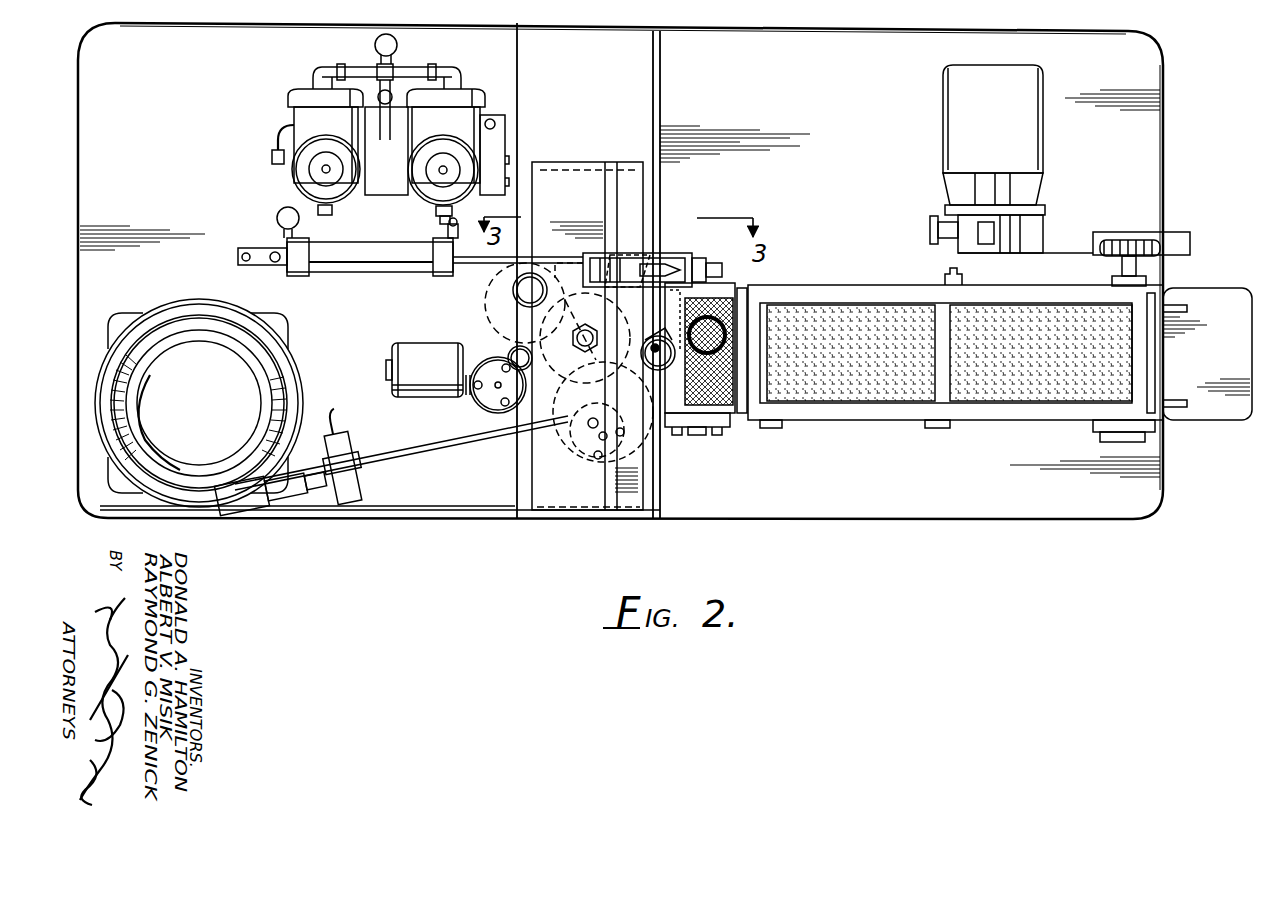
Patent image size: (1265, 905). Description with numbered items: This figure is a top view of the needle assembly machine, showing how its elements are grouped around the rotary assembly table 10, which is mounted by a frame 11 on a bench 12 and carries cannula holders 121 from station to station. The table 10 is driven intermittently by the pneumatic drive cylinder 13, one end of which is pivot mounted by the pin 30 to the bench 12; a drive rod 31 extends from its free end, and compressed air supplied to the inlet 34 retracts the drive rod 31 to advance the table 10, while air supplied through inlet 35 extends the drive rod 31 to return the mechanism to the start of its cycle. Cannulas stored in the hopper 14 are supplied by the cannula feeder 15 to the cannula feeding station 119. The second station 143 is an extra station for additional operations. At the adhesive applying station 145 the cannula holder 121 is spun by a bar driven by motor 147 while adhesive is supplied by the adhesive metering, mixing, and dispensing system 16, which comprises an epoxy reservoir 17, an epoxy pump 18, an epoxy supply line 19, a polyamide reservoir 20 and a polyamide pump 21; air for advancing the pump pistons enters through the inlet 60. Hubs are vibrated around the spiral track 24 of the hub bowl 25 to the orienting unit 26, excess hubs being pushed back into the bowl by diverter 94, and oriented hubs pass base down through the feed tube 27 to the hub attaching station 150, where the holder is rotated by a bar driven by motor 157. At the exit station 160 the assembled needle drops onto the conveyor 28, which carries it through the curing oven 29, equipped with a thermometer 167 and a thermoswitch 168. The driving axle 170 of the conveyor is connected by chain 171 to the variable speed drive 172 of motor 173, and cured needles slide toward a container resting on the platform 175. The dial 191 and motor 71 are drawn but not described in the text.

The rotary assembly table 10 is at (662, 392).
The frame 11 is at (568, 172).
The bench 12 is at (620, 271).
The pneumatic drive cylinder 13 is at (339, 252).
The hopper 14 is at (684, 257).
The cannula feeder 15 is at (706, 264).
The adhesive metering, mixing, and dispensing system 16 is at (386, 300).
The epoxy reservoir 17 is at (463, 190).
The epoxy pump 18 is at (488, 99).
The epoxy supply line 19 is at (432, 211).
The polyamide reservoir 20 is at (303, 174).
The polyamide pump 21 is at (302, 101).
The spiral track 24 is at (182, 505).
The hub bowl 25 is at (266, 368).
The orienting unit 26 is at (305, 458).
The feed tube 27 is at (424, 446).
The conveyor 28 is at (740, 306).
The curing oven 29 is at (836, 392).
The pin 30 is at (275, 264).
The drive rod 31 is at (462, 278).
The inlet 34 is at (445, 232).
The inlet 35 is at (279, 216).
The inlet 60 is at (397, 48).
The drive motor 71 is at (413, 350).
The diverter 94 is at (132, 478).
The cannula feeding station 119 is at (652, 250).
The cannula holder 121 is at (514, 290).
The second station 143 is at (510, 305).
The adhesive applying station 145 is at (510, 352).
The motor 147 is at (497, 413).
The hub attaching station 150 is at (572, 427).
The motor 157 is at (585, 462).
The exit station 160 is at (695, 372).
The thermometer 167 is at (955, 382).
The thermoswitch 168 is at (942, 276).
The driving axle 170 is at (1128, 446).
The chain 171 is at (1150, 240).
The variable speed drive 172 is at (930, 223).
The motor 173 is at (962, 125).
The platform 175 is at (1220, 300).
The indicator dial 191 is at (707, 335).